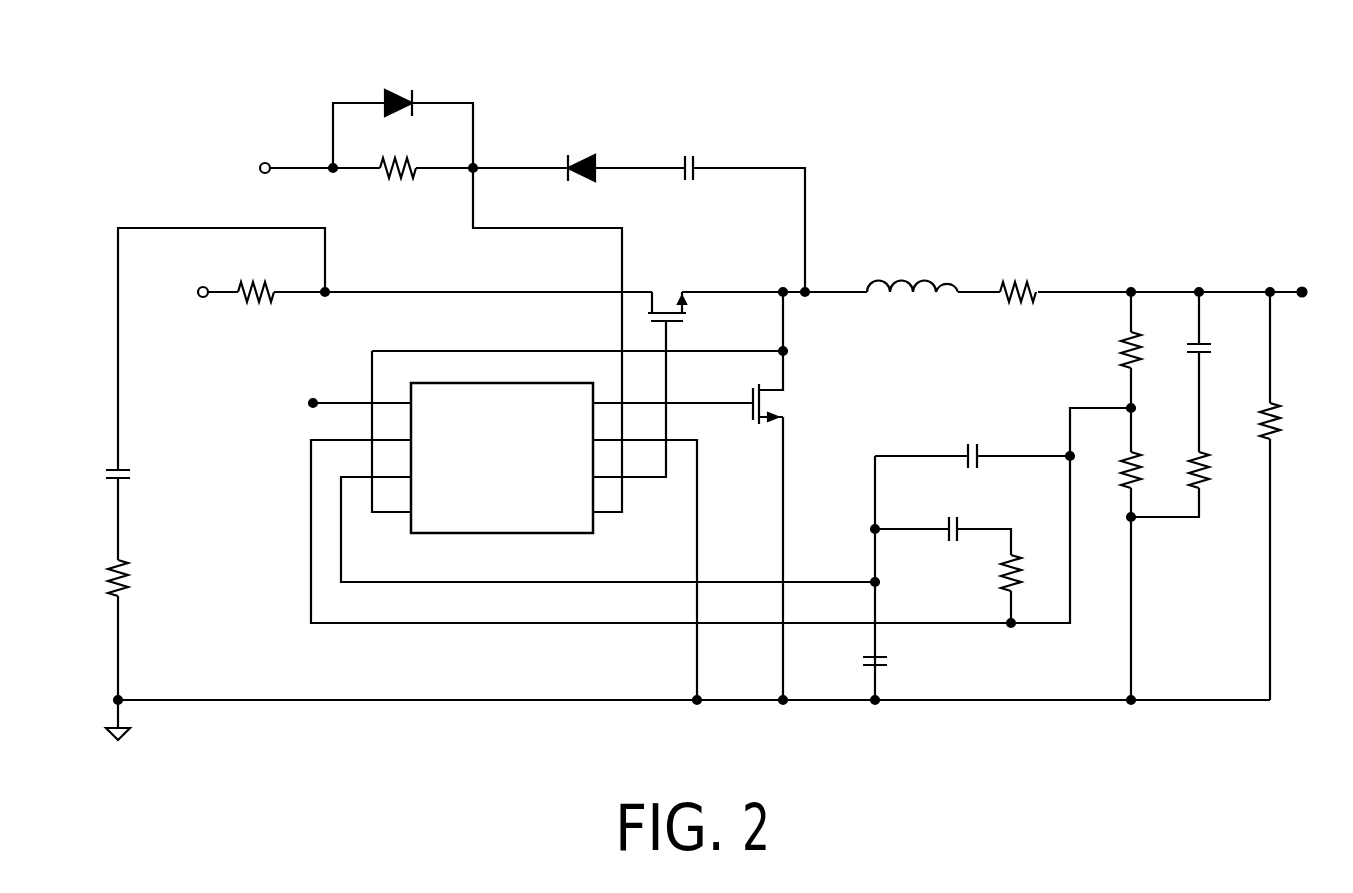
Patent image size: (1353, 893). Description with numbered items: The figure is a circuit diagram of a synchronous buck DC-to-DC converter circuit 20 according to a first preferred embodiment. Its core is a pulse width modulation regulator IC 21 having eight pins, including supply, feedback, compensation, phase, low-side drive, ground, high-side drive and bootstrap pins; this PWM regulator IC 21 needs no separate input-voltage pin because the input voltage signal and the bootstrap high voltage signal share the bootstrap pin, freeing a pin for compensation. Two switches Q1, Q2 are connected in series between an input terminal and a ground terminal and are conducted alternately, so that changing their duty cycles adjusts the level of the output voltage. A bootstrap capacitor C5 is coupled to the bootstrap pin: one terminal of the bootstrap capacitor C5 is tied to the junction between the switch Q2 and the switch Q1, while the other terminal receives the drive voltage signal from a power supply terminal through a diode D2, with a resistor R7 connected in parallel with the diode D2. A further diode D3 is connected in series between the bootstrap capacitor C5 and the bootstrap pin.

The synchronous buck DC-to-DC converter circuit 20 is at (725, 398).
The PWM regulator IC 21 is at (513, 533).
The diode D2 is at (399, 86).
The diode D3 is at (582, 151).
The resistor R7 is at (398, 189).
The bootstrap capacitor C5 is at (691, 150).
The switch Q1 is at (667, 295).
The switch Q2 is at (789, 404).